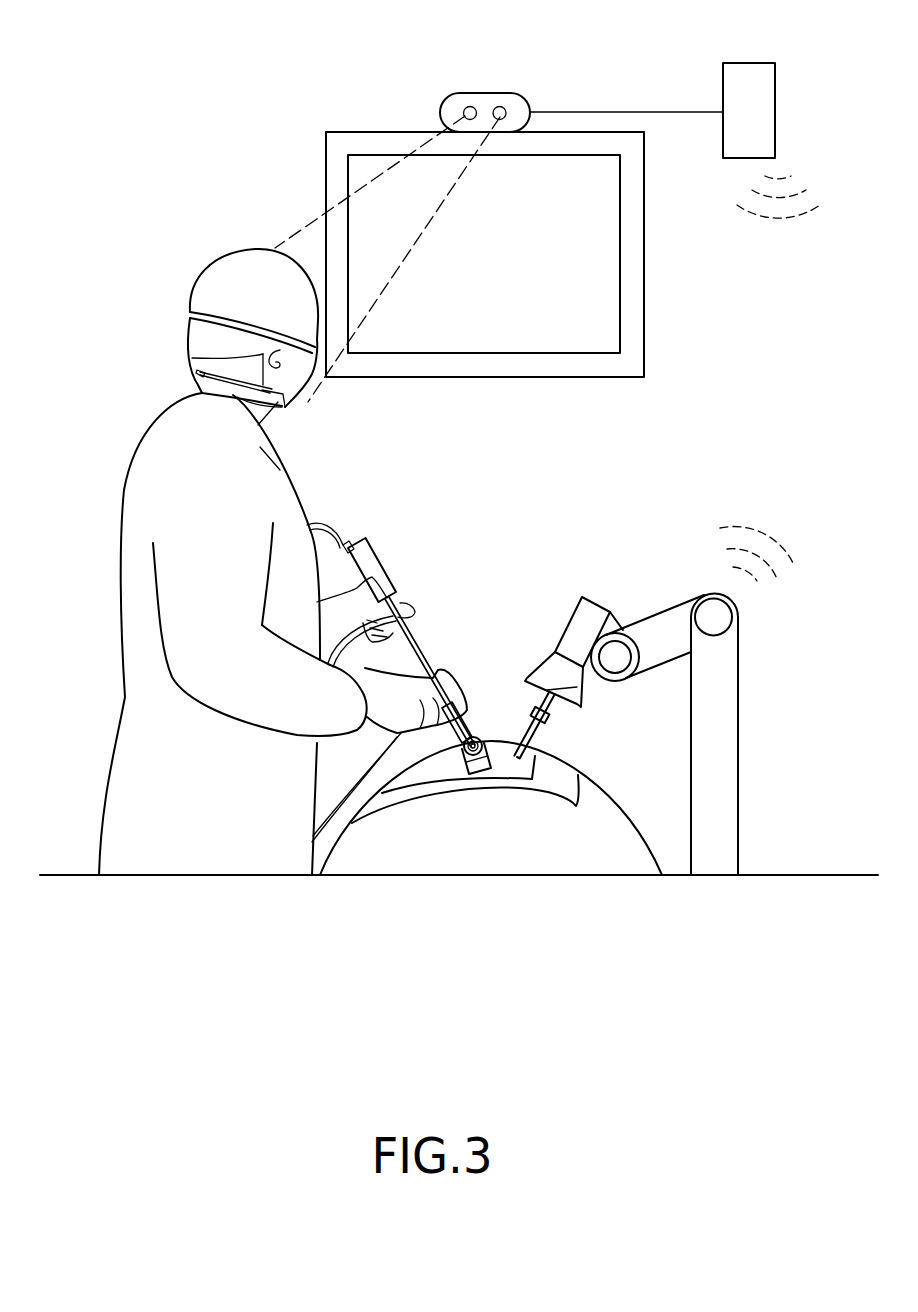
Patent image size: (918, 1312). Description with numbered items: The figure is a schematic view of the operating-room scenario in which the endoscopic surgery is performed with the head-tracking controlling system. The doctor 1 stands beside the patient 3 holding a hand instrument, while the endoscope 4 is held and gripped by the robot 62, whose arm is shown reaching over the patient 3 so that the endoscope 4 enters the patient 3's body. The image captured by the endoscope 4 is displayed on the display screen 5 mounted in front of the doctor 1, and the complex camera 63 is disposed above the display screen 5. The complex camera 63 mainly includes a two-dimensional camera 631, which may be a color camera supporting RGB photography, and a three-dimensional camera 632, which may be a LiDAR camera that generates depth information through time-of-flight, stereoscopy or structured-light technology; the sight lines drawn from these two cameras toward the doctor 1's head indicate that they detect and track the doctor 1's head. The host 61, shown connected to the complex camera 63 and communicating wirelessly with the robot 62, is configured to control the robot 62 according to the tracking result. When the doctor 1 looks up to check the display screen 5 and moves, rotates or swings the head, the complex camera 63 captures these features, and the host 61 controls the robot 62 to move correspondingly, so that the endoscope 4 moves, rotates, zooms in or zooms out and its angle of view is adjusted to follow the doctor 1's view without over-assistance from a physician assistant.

The doctor 1 is at (158, 445).
The patient 3 is at (486, 843).
The endoscope 4 is at (533, 738).
The display screen 5 is at (598, 222).
The host 61 is at (757, 75).
The robot 62 is at (662, 622).
The complex camera 63 is at (486, 75).
The 2D camera 631 is at (470, 105).
The 3D camera 632 is at (500, 105).